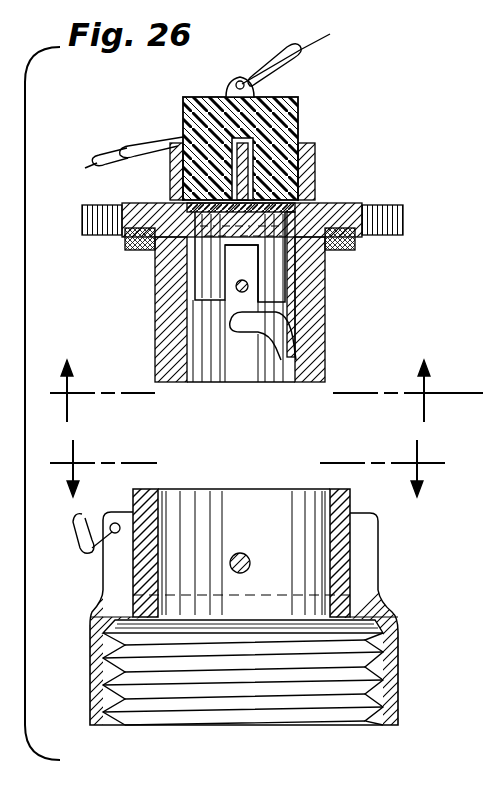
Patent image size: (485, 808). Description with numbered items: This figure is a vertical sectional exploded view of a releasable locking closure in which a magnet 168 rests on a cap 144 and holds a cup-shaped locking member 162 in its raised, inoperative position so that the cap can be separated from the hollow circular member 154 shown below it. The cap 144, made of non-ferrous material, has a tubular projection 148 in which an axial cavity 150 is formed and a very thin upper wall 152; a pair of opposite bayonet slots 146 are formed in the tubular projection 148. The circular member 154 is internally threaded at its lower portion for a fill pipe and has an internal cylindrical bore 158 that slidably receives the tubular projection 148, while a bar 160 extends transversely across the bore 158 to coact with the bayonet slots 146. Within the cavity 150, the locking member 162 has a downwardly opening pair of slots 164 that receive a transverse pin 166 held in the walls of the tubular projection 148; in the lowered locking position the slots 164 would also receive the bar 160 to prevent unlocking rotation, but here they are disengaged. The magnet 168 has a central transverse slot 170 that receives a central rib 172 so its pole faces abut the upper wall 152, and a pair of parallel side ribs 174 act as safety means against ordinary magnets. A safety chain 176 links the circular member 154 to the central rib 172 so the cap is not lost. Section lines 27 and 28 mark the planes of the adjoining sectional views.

The cap 144 is at (330, 205).
The bayonet slots 146 is at (257, 335).
The tubular projection 148 is at (160, 324).
The cavity 150 is at (233, 375).
The upper wall 152 is at (300, 122).
The hollow circular member 154 is at (386, 600).
The internal cylindrical bore 158 is at (328, 520).
The bar 160 is at (240, 553).
The cup-shaped locking member 162 is at (190, 268).
The slots 164 is at (253, 255).
The transverse pin 166 is at (248, 289).
The magnet 168 is at (213, 97).
The central transverse slot 170 is at (287, 97).
The central rib 172 is at (182, 160).
The side ribs 174 is at (315, 170).
The safety chain 176 is at (167, 137).
The section line 27 is at (266, 394).
The section line 28 is at (247, 467).